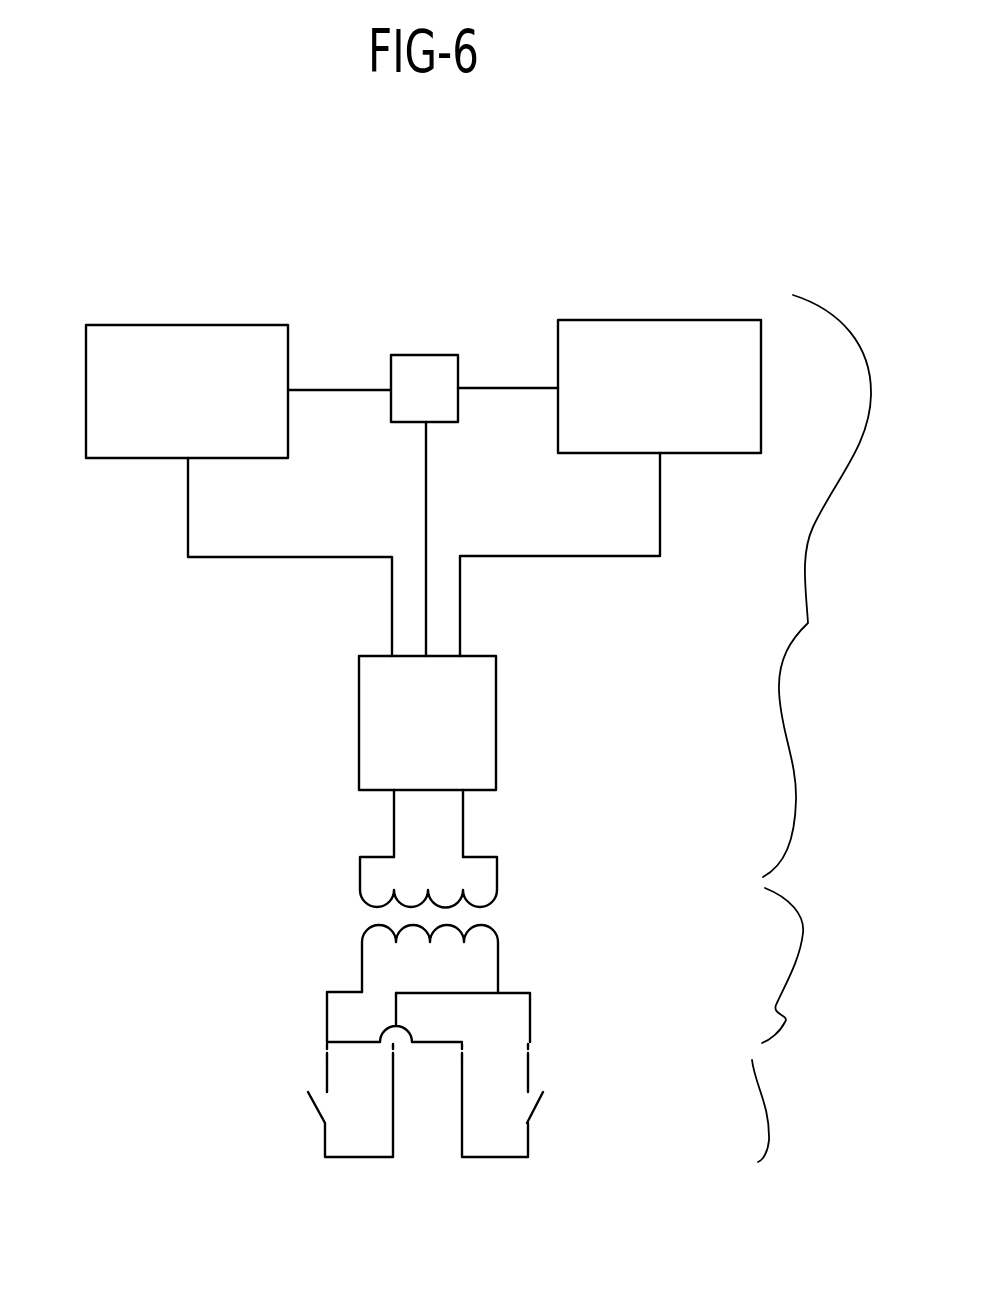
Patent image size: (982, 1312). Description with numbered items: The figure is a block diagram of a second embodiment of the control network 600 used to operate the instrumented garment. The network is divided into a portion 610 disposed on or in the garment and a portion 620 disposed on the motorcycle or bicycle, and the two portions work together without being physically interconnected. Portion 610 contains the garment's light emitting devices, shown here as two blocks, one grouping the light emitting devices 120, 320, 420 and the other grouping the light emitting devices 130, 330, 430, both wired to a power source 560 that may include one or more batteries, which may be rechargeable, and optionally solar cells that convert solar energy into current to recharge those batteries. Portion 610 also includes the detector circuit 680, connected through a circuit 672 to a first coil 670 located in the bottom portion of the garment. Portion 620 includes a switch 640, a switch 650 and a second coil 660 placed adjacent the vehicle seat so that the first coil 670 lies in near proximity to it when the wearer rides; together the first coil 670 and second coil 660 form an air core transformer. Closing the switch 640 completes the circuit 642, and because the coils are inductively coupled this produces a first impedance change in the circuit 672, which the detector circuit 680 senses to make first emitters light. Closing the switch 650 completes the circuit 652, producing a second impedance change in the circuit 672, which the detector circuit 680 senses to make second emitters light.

The light emitting device 120 is at (187, 391).
The light emitting device 320 is at (187, 391).
The light emitting device 420 is at (197, 435).
The light emitting device 130 is at (659, 384).
The light emitting device 330 is at (659, 386).
The light emitting device 430 is at (682, 428).
The power source 560 is at (420, 370).
The control network 600 is at (116, 914).
The portion 610 is at (835, 586).
The portion 620 is at (827, 1025).
The switch 640 is at (310, 1117).
The circuit 642 is at (320, 1020).
The switch 650 is at (533, 1110).
The circuit 652 is at (532, 1018).
The second coil 660 is at (485, 935).
The first coil 670 is at (355, 878).
The circuit 672 is at (463, 817).
The detector circuit 680 is at (478, 712).